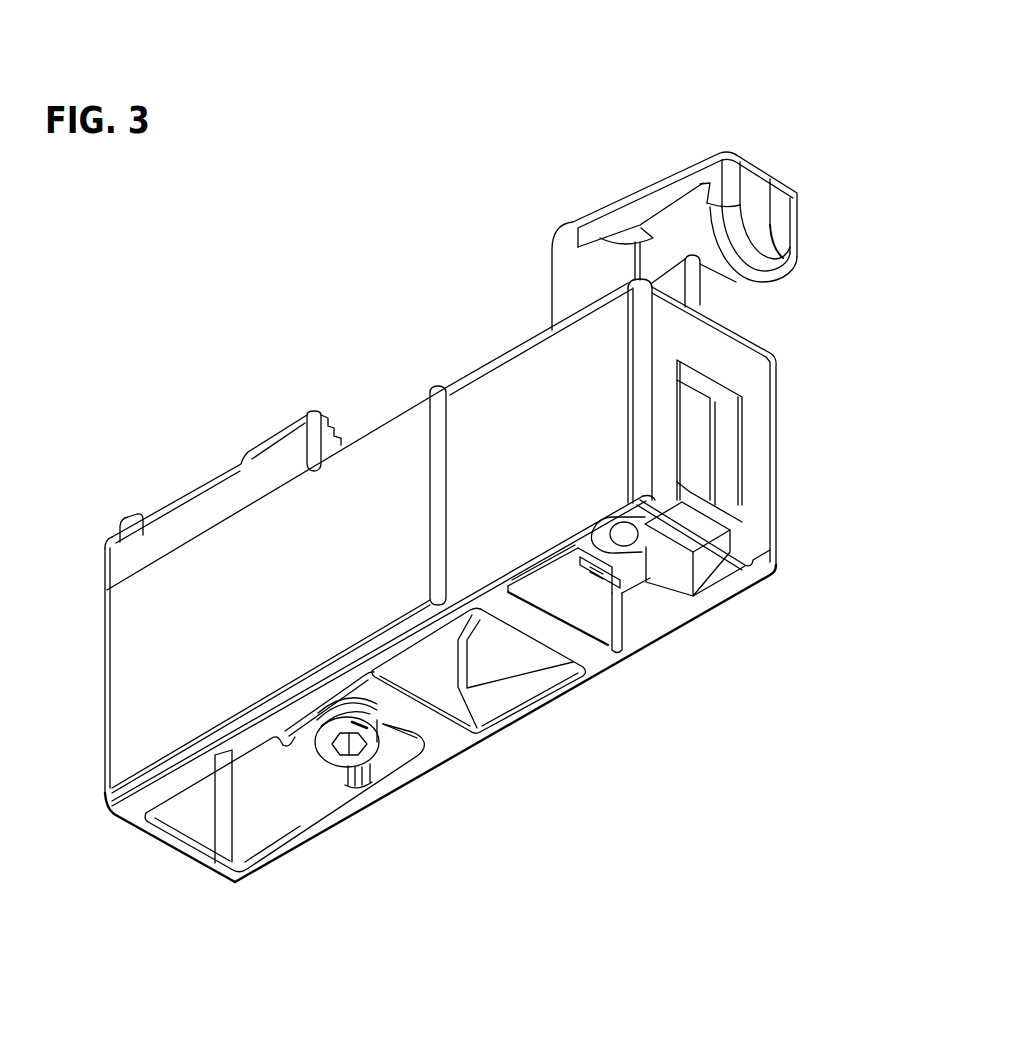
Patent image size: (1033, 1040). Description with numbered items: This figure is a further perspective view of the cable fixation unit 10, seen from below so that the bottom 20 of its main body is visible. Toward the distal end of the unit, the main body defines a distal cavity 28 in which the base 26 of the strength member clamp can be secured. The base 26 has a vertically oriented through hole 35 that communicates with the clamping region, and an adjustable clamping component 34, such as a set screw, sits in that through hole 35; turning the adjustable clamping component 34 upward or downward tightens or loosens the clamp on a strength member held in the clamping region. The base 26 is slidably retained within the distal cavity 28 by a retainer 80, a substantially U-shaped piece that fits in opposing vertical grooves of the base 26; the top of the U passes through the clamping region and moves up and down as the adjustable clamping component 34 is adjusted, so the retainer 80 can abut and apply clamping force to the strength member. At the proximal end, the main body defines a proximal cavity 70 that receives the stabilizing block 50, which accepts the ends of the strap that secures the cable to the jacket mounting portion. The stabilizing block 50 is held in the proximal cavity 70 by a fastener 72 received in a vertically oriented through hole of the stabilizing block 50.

The cable fixation unit 10 is at (665, 124).
The bottom 20 is at (445, 738).
The base 26 is at (628, 562).
The distal cavity 28 is at (595, 628).
The adjustable clamping component 34 is at (618, 538).
The through hole 35 is at (592, 533).
The stabilizing block 50 is at (298, 722).
The proximal cavity 70 is at (200, 822).
The fastener 72 is at (376, 746).
The retainer 80 is at (688, 445).